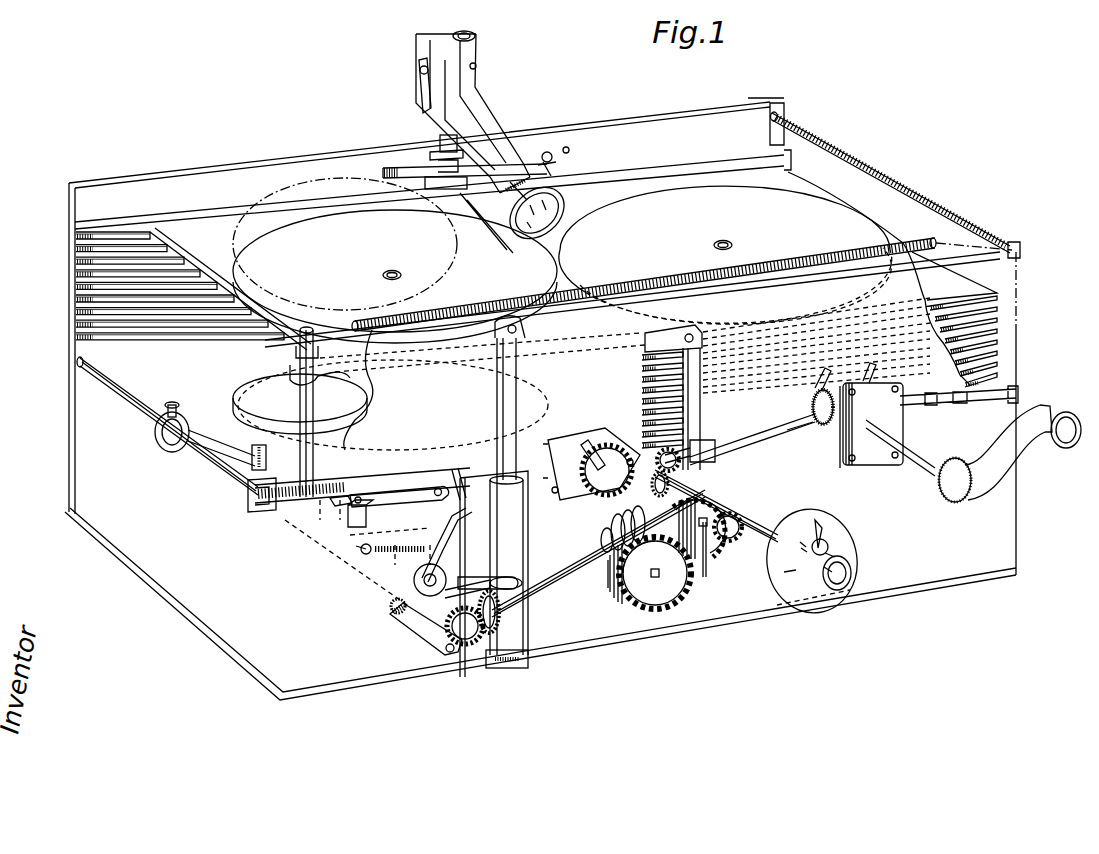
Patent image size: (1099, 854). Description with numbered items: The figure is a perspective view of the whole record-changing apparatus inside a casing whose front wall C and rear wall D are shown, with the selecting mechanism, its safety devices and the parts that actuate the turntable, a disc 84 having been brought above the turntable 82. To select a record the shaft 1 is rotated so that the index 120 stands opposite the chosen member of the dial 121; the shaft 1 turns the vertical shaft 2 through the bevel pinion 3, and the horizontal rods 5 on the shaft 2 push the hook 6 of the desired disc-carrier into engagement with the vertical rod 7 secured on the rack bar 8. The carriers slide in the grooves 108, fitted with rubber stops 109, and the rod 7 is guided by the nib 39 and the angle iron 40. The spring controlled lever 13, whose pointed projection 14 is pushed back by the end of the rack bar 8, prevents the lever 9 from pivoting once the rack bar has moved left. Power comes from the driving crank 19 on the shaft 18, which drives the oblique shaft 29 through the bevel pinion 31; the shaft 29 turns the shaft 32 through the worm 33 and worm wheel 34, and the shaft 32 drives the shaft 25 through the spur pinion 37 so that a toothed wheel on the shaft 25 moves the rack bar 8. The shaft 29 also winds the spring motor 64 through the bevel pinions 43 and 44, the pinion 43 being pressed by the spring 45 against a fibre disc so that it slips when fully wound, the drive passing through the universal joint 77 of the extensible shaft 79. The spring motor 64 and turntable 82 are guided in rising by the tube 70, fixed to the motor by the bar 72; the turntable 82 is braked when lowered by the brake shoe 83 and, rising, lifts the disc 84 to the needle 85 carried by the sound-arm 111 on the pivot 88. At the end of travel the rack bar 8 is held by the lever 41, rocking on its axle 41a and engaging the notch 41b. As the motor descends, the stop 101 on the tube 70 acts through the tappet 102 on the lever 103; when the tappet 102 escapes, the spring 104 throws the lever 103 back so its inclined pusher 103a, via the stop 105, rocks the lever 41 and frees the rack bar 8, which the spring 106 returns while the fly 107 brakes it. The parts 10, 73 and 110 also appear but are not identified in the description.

The shaft 1 is at (760, 513).
The vertical shaft 2 is at (700, 436).
The bevel pinion 3 is at (656, 482).
The horizontal rods 5 is at (700, 413).
The hook 6 is at (292, 373).
The rod 7 is at (307, 350).
The rack bar 8 is at (257, 503).
The lever 9 is at (715, 446).
The pinion 10 is at (657, 458).
The spring controlled lever 13 is at (806, 432).
The pointed projection 14 is at (1016, 397).
The shaft 18 is at (937, 458).
The driving crank 19 is at (1010, 453).
The shaft 25 is at (714, 551).
The oblique shaft 29 is at (760, 448).
The bevel pinion 31 is at (814, 400).
The shaft 32 is at (653, 582).
The worm 33 is at (615, 519).
The worm wheel 34 is at (668, 587).
The spur pinion 37 is at (730, 536).
The nib 39 is at (300, 356).
The angle iron 40 is at (373, 357).
The lever 41 is at (307, 510).
The axle 41a is at (377, 490).
The notch 41b is at (300, 512).
The bevel pinion 43 is at (468, 635).
The bevel pinion 44 is at (427, 637).
The spring 45 is at (455, 645).
The spring motor 64 is at (340, 527).
The tube 70 is at (507, 627).
The bar 72 is at (520, 662).
The post 73 is at (507, 368).
The universal joint 77 is at (390, 607).
The extensible shaft 79 is at (367, 563).
The turntable 82 is at (242, 392).
The brake shoe 83 is at (252, 440).
The disc 84 is at (273, 235).
The needle 85 is at (543, 240).
The pivot 88 is at (442, 152).
The stop 101 is at (483, 578).
The tappet 102 is at (425, 566).
The lever 103 is at (452, 524).
The inclined pusher 103a is at (435, 520).
The spring 104 is at (390, 553).
The stop 105 is at (420, 497).
The spring 106 is at (931, 242).
The fly 107 is at (593, 445).
The grooves 108 is at (80, 338).
The rubber stops 109 is at (787, 174).
The bracket bar 110 is at (403, 177).
The sound-arm 111 is at (487, 133).
The index 120 is at (823, 547).
The dial 121 is at (803, 595).
The front wall C is at (1000, 540).
The rear wall D is at (748, 118).